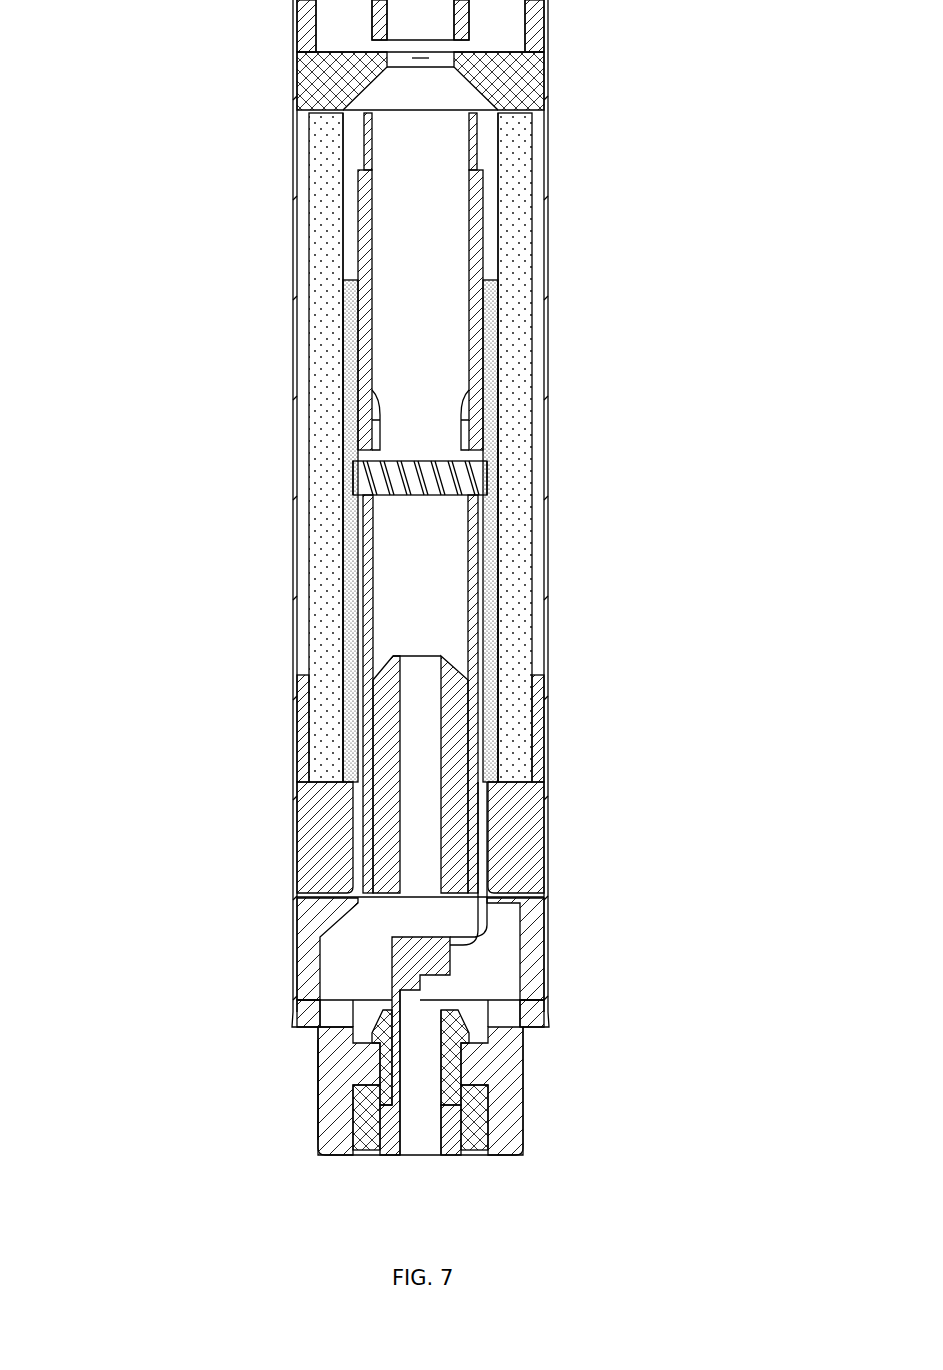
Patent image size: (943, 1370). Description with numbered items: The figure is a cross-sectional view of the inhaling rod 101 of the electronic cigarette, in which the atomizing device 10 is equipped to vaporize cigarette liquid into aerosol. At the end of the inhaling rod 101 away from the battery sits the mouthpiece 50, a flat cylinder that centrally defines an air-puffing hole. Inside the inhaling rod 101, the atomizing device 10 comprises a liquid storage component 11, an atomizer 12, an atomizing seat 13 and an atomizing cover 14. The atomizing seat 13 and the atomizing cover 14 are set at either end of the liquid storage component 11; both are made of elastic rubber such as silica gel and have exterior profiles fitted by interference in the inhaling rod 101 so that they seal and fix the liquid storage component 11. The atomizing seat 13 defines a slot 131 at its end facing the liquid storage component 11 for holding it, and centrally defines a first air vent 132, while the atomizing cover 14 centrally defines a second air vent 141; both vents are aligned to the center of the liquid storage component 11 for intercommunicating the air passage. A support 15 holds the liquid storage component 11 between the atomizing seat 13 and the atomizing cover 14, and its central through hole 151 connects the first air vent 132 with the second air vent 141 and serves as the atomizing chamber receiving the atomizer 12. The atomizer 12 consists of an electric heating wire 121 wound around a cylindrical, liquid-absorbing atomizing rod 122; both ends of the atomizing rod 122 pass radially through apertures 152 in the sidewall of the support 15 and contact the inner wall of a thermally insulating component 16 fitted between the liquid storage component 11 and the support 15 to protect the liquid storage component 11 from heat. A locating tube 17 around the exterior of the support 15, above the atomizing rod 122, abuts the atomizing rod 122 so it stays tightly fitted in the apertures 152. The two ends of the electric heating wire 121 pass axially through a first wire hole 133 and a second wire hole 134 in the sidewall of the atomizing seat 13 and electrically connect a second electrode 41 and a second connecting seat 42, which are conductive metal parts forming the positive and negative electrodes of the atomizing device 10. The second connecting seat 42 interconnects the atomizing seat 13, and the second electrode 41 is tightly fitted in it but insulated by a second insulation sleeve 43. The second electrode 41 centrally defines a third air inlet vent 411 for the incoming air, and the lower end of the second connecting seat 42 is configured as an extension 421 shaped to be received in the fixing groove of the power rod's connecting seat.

The atomizing device 10 is at (688, 125).
The inhaling rod 101 is at (293, 896).
The liquid storage component 11 is at (510, 325).
The atomizer 12 is at (637, 450).
The electric heating wire 121 is at (488, 468).
The atomizing rod 122 is at (480, 483).
The atomizing seat 13 is at (548, 815).
The slot 131 is at (303, 723).
The first air vent 132 is at (415, 710).
The first wire hole 133 is at (352, 815).
The second wire hole 134 is at (490, 840).
The atomizing cover 14 is at (520, 78).
The second air vent 141 is at (420, 58).
The support 15 is at (360, 540).
The through hole 151 is at (420, 210).
The apertures 152 is at (378, 440).
The thermally insulating component 16 is at (345, 600).
The locating tube 17 is at (350, 288).
The second electrode 41 is at (480, 1135).
The third air inlet vent 411 is at (423, 1130).
The second connecting seat 42 is at (505, 1050).
The extension 421 is at (317, 1052).
The second insulation sleeve 43 is at (360, 1125).
The mouthpiece 50 is at (545, 32).